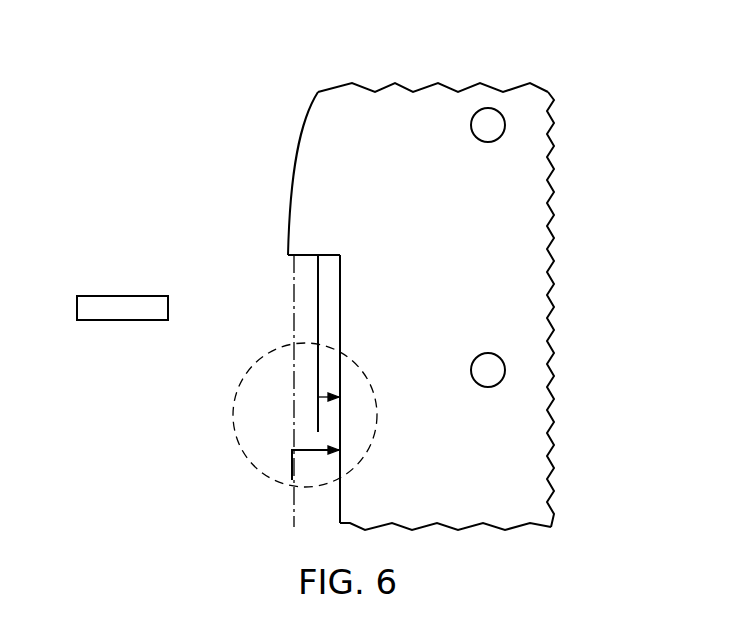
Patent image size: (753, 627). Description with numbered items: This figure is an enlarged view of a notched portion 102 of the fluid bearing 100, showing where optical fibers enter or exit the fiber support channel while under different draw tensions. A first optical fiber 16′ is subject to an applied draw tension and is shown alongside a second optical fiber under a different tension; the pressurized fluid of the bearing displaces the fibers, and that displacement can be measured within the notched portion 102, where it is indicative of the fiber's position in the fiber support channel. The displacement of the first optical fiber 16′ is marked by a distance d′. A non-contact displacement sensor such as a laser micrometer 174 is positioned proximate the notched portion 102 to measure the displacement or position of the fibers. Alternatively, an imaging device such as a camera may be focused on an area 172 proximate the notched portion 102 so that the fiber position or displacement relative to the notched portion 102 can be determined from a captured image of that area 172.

The fluid bearing 100 is at (367, 277).
The notched portion 102 is at (340, 254).
The first optical fiber 16′ is at (292, 493).
The first flange depth d′ is at (308, 452).
The area 172 is at (247, 378).
The laser micrometer 174 is at (103, 257).